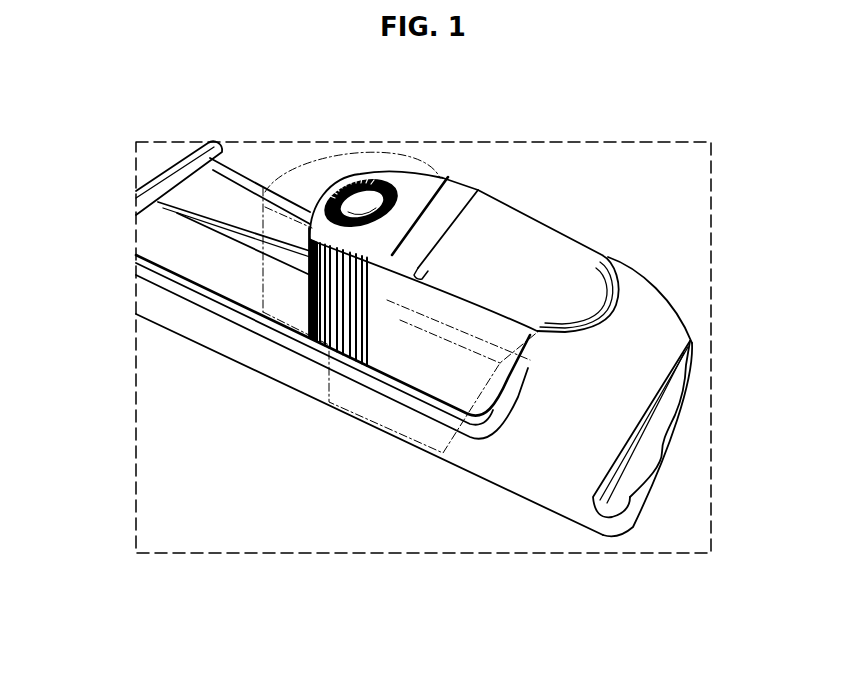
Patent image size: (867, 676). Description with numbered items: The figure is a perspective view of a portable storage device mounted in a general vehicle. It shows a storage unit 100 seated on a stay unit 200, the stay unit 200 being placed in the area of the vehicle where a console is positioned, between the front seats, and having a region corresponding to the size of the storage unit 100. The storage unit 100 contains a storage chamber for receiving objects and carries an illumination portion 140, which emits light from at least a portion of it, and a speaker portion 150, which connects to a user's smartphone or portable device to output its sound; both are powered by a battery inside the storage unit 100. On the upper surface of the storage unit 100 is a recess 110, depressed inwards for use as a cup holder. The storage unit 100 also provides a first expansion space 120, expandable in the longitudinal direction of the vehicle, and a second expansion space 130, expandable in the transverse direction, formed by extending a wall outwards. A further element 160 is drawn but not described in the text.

The storage unit 100 is at (455, 343).
The recess 110 is at (351, 176).
The first expansion space 120 is at (310, 182).
The second expansion space 130 is at (412, 320).
The illumination portion 140 is at (386, 178).
The speaker portion 150 is at (310, 313).
The fixing strap 160 is at (452, 190).
The stay unit 200 is at (312, 388).